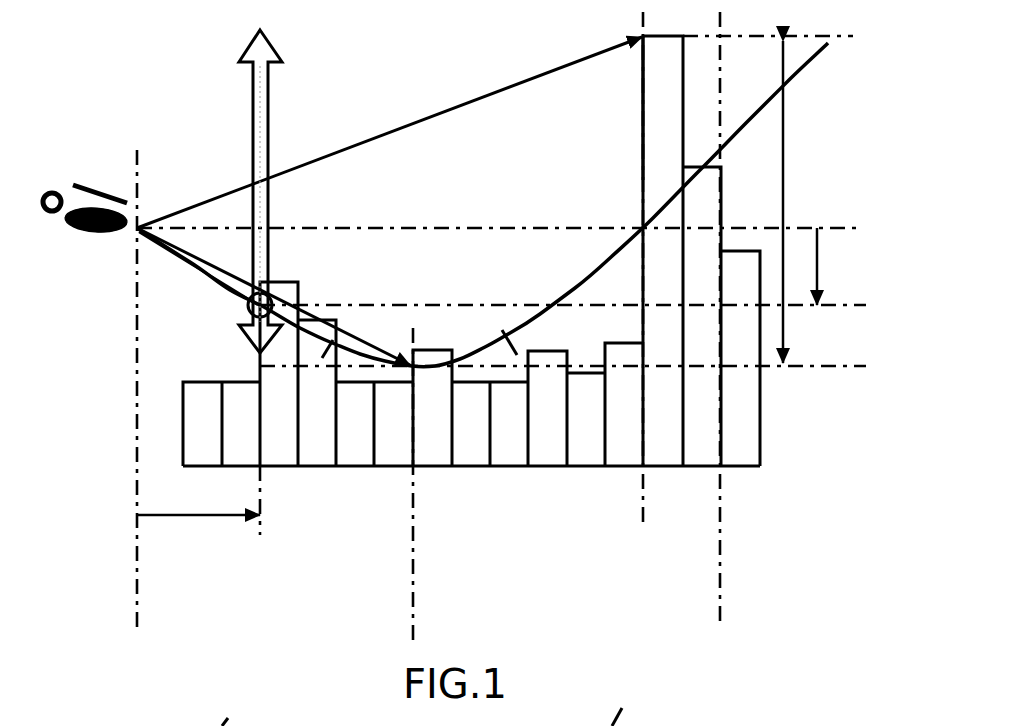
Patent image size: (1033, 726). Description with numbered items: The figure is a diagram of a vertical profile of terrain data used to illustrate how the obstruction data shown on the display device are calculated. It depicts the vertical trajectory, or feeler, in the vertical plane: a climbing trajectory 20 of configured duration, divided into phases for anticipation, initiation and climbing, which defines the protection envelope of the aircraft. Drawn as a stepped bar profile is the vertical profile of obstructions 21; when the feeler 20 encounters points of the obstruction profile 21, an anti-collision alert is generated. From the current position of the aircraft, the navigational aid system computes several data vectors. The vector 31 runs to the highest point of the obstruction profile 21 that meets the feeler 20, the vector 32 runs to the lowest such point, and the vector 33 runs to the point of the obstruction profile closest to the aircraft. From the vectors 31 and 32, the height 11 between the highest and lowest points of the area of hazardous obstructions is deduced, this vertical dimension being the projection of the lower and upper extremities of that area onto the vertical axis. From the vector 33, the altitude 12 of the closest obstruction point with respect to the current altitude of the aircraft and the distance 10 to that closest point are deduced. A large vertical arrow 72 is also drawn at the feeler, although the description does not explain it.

The distance 10 is at (233, 520).
The height 11 is at (772, 188).
The altitude 12 is at (818, 268).
The climbing trajectory 20 is at (597, 273).
The obstruction profile 21 is at (652, 183).
The vector 31 is at (460, 107).
The vector 32 is at (370, 343).
The vector 33 is at (217, 280).
The vertical direction arrow 72 is at (262, 86).